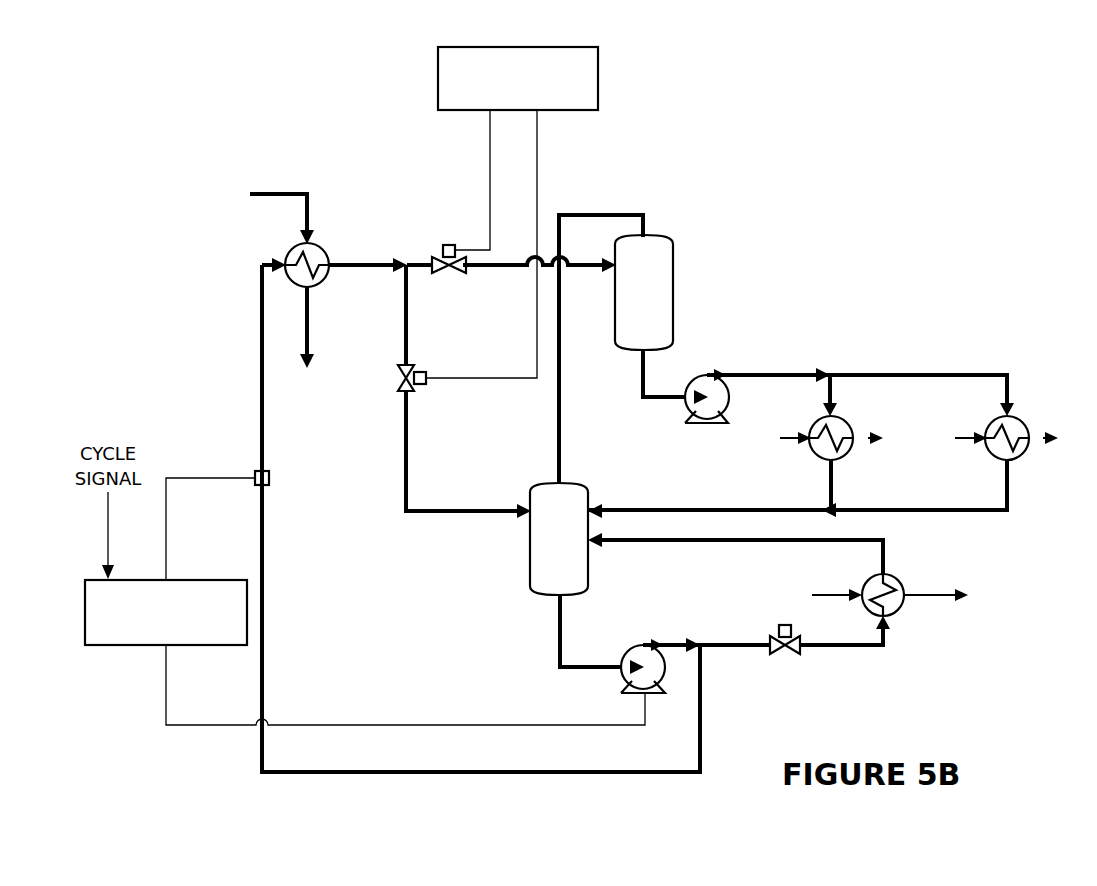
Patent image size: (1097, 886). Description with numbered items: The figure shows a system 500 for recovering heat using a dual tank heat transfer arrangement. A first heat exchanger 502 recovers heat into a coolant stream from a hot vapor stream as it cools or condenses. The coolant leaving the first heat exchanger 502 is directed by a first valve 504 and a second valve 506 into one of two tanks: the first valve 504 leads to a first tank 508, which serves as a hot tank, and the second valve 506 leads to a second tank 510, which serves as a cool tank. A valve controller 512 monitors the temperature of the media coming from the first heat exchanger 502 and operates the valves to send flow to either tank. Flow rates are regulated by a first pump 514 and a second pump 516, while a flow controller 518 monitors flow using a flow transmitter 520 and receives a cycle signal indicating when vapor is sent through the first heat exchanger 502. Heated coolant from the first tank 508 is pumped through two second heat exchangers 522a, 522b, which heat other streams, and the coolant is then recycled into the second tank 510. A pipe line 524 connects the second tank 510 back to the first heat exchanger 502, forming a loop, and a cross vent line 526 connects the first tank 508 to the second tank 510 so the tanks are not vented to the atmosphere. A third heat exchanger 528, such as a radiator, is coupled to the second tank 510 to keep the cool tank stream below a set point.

The system 500 is at (780, 53).
The first heat exchanger 502 is at (322, 245).
The first valve 504 is at (448, 245).
The second valve 506 is at (425, 372).
The first tank 508 is at (673, 262).
The second tank 510 is at (570, 483).
The valve controller 512 is at (528, 47).
The first pump 514 is at (707, 376).
The second pump 516 is at (648, 646).
The flow controller 518 is at (180, 580).
The flow transmitter 520 is at (269, 480).
The second heat exchanger 522a is at (849, 426).
The second heat exchanger 522b is at (1024, 420).
The pipe line 524 is at (485, 772).
The cross vent line 526 is at (597, 214).
The third heat exchanger 528 is at (900, 580).